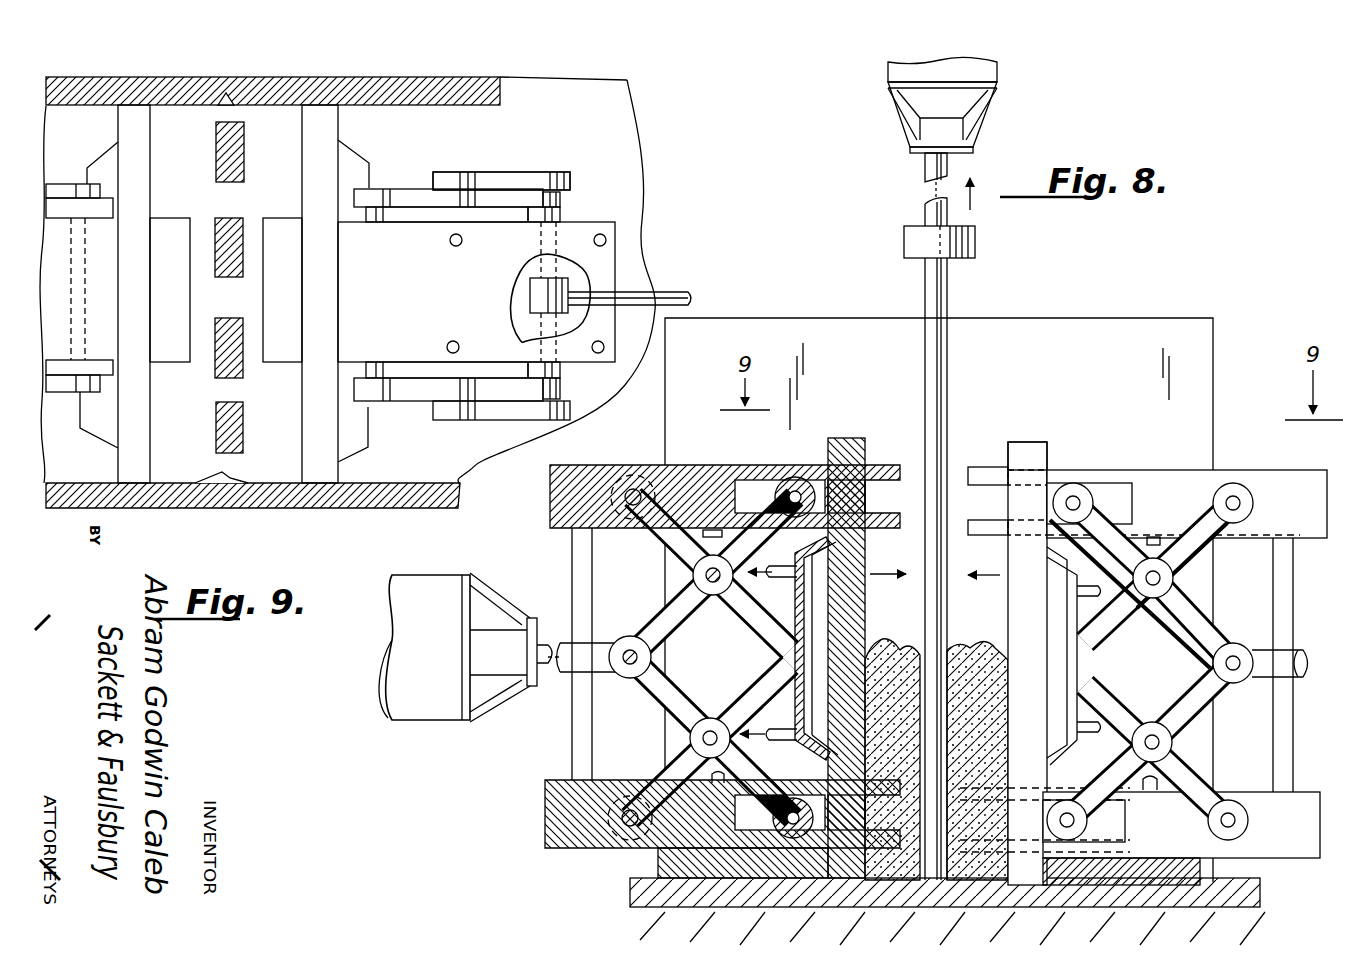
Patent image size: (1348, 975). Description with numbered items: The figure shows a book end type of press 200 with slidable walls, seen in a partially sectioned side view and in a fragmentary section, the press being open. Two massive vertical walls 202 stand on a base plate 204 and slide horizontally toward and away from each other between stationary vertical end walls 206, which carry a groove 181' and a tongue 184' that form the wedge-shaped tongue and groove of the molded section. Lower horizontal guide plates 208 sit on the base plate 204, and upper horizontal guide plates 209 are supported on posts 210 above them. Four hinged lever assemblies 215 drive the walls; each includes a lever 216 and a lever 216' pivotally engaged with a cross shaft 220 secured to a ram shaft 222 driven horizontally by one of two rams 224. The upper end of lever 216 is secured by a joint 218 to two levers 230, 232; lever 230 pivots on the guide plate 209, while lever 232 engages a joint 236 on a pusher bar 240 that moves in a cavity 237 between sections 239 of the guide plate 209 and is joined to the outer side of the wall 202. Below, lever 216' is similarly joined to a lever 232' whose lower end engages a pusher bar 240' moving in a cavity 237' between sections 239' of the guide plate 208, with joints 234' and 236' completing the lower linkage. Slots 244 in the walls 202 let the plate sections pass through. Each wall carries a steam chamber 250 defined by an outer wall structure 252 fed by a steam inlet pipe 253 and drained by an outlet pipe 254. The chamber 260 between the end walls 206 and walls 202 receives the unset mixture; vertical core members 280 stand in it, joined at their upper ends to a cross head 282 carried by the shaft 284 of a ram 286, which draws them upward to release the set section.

In FIG. 9, the notch in upper plate 181' is at (207, 78).
In FIG. 9, the tongue 184' is at (230, 504).
In FIG. 9, the book end type of press 200 is at (372, 517).
In FIG. 8, the vertical wall 202 is at (1037, 455).
In FIG. 9, the vertical wall 202 is at (340, 80).
In FIG. 8, the base plate 204 is at (658, 887).
In FIG. 9, the base plate 204 is at (62, 452).
In FIG. 9, the stationary vertical end wall 206 is at (105, 506).
In FIG. 8, the lower horizontal guide plate 208 is at (1295, 842).
In FIG. 8, the upper horizontal guide plate 209 is at (1270, 482).
In FIG. 9, the upper horizontal guide plate 209 is at (573, 237).
In FIG. 8, the post 210 is at (583, 563).
In FIG. 9, the post 210 is at (607, 237).
In FIG. 8, the hinged lever assembly 215 is at (692, 624).
In FIG. 9, the hinged lever assembly 215 is at (510, 164).
In FIG. 8, the lever 216 is at (1184, 622).
In FIG. 9, the lever 216 is at (501, 159).
In FIG. 8, the lever 216' is at (1182, 702).
In FIG. 8, the joint 218 is at (1150, 582).
In FIG. 8, the cross shaft 220 is at (1234, 648).
In FIG. 9, the cross shaft 220 is at (548, 270).
In FIG. 8, the ram shaft 222 is at (1293, 680).
In FIG. 9, the ram shaft 222 is at (690, 294).
In FIG. 8, the ram 224 is at (440, 700).
In FIG. 8, the lever 230 is at (1200, 523).
In FIG. 9, the lever 230 is at (513, 217).
In FIG. 8, the lever 232 is at (1137, 495).
In FIG. 9, the lever 232 is at (457, 295).
In FIG. 8, the lever 232' is at (1120, 781).
In FIG. 8, the roller 234' is at (1266, 820).
In FIG. 8, the joint 236 is at (1073, 523).
In FIG. 8, the roller 236' is at (1113, 826).
In FIG. 8, the cavity 237 is at (1100, 483).
In FIG. 8, the cavity 237' is at (1115, 867).
In FIG. 8, the section of guide plate 239 is at (988, 475).
In FIG. 9, the section of guide plate 239 is at (287, 204).
In FIG. 8, the section of guide plate 239' is at (1121, 889).
In FIG. 8, the pusher bar 240 is at (1063, 482).
In FIG. 8, the pusher bar 240' is at (1045, 804).
In FIG. 8, the slot 244 is at (1017, 463).
In FIG. 8, the steam chamber 250 is at (817, 670).
In FIG. 8, the outer wall structure 252 is at (803, 623).
In FIG. 9, the outer wall structure 252 is at (343, 163).
In FIG. 8, the steam inlet pipe 253 is at (782, 582).
In FIG. 8, the outlet pipe 254 is at (773, 723).
In FIG. 8, the chamber 260 is at (907, 548).
In FIG. 9, the chamber 260 is at (273, 440).
In FIG. 8, the core member 280 is at (938, 280).
In FIG. 9, the core member 280 is at (210, 440).
In FIG. 8, the cross head 282 is at (903, 237).
In FIG. 8, the shaft 284 is at (935, 165).
In FIG. 8, the ram 286 is at (920, 100).